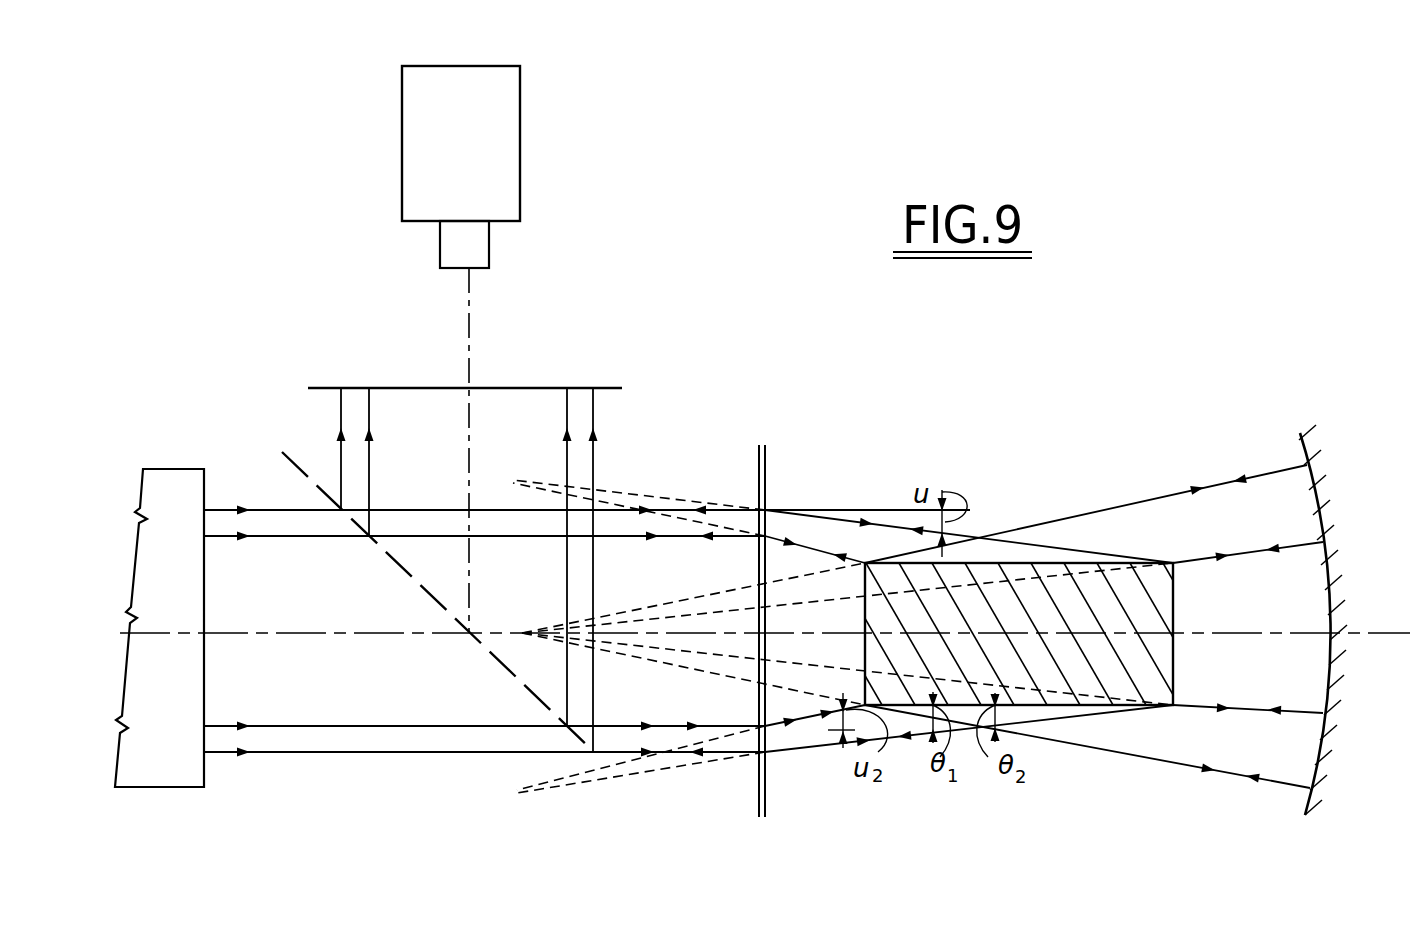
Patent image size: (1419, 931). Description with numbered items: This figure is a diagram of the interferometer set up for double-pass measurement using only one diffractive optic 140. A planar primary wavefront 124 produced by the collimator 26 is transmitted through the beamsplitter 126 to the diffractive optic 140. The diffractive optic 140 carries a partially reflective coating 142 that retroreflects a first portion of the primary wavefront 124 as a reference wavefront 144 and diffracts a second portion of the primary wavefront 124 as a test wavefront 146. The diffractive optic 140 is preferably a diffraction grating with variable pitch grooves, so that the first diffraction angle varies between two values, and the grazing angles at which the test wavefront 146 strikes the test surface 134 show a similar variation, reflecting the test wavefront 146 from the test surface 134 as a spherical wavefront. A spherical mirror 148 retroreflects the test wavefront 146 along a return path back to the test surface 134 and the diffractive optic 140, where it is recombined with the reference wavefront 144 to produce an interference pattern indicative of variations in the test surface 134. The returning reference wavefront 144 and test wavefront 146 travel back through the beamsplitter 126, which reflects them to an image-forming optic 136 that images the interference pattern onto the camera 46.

The collimator 26 is at (162, 488).
The primary wavefront 124 is at (268, 537).
The beamsplitter 126 is at (510, 680).
The image-forming optic 136 is at (622, 388).
The camera 46 is at (471, 153).
The reference wavefront 144 is at (740, 778).
The test wavefront 146 is at (1087, 517).
The diffractive optic 140 is at (762, 805).
The partially reflective coating 142 is at (767, 448).
The test surface 134 is at (1021, 563).
The spherical mirror 148 is at (1325, 583).